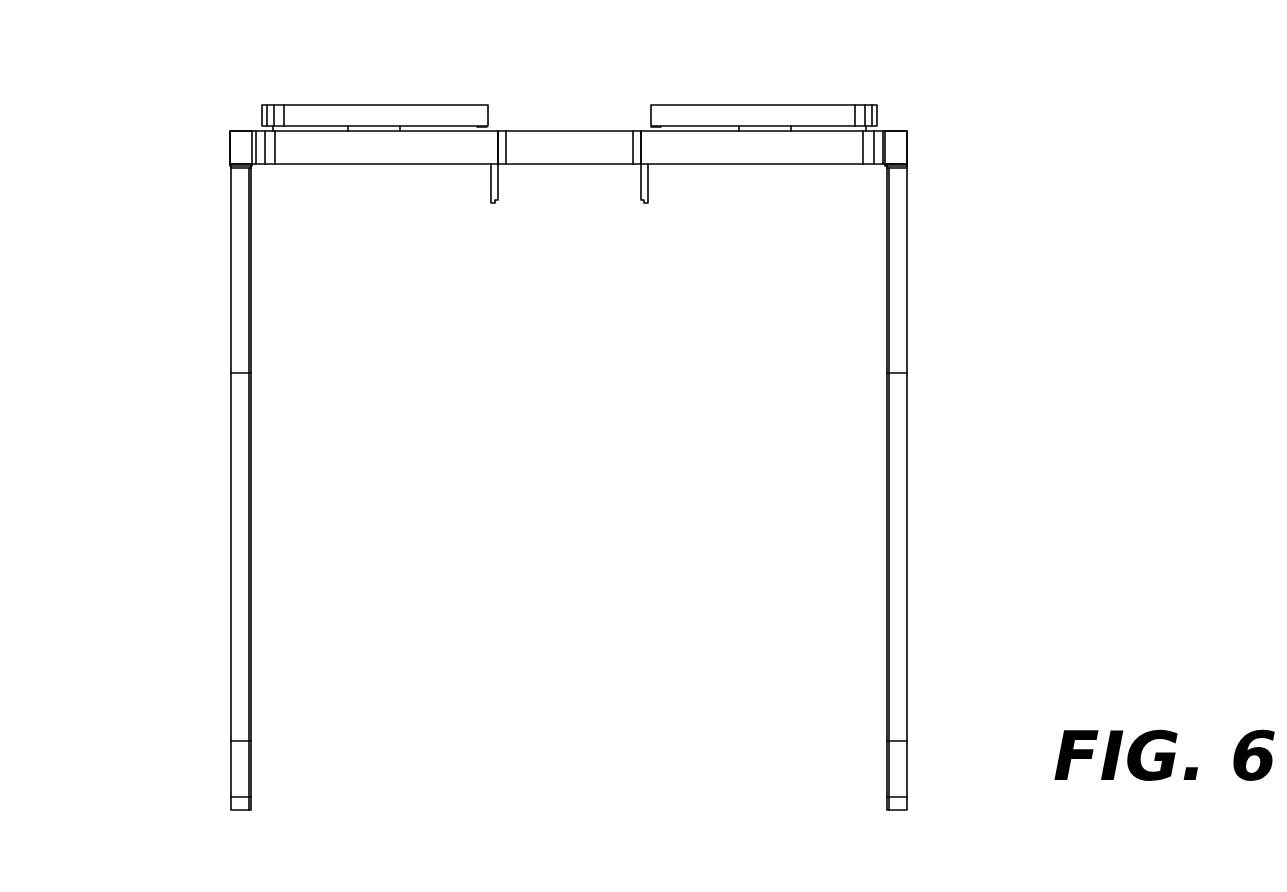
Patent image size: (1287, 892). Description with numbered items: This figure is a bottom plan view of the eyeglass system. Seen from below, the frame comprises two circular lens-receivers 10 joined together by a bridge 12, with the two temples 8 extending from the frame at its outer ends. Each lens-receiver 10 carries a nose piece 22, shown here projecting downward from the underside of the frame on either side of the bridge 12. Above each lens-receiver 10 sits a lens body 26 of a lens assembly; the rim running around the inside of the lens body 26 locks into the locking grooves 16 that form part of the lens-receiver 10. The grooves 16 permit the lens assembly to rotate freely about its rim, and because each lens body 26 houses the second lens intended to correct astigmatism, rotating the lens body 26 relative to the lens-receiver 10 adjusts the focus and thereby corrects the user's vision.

The temple 8 is at (232, 625).
The lens-receiver 10 is at (417, 165).
The bridge 12 is at (533, 130).
The locking groove 16 is at (484, 127).
The nose piece 22 is at (495, 203).
The lens body 26 is at (262, 110).